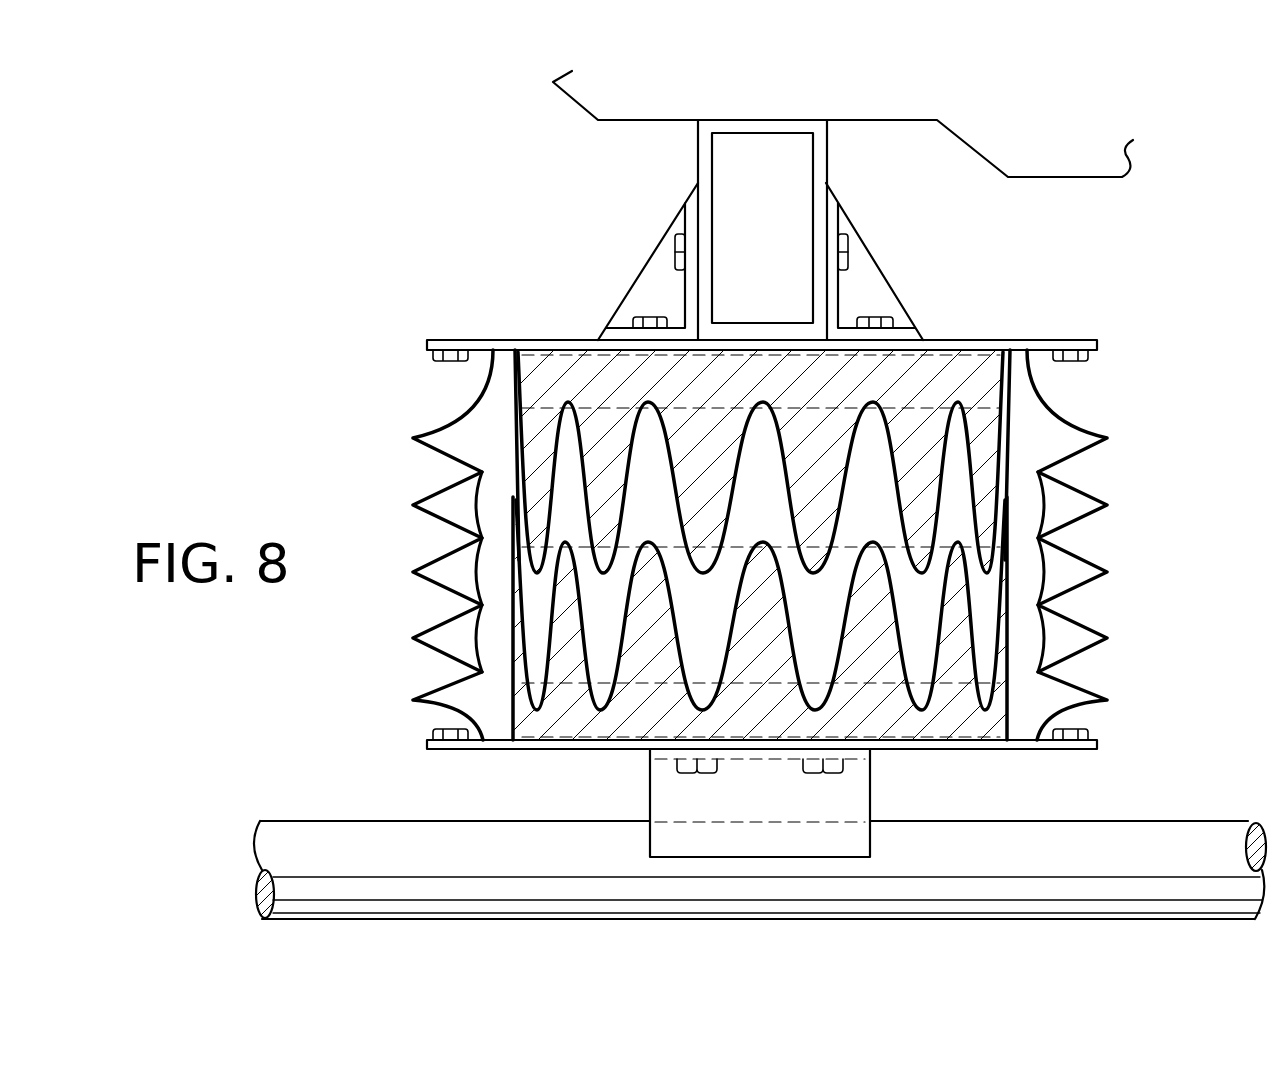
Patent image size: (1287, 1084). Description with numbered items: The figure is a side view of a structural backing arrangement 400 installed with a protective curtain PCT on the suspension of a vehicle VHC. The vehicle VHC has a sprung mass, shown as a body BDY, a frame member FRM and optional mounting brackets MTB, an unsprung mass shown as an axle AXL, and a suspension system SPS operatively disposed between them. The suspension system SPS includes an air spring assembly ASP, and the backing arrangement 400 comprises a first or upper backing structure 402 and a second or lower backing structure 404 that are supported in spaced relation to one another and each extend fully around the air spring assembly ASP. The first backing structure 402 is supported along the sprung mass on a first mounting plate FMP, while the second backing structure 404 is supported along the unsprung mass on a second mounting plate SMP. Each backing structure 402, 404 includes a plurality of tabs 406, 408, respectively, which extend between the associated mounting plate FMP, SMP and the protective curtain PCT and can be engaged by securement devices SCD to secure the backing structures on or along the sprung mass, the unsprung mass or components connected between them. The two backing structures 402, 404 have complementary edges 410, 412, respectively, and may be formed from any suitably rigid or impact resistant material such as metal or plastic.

The structural backing arrangement 400 is at (483, 437).
The first backing structure 402 is at (998, 423).
The second backing structure 404 is at (1005, 662).
The tabs 406 is at (500, 345).
The tabs 408 is at (1025, 750).
The complementary edge 410 is at (674, 520).
The complementary edge 412 is at (729, 645).
The vehicle VHC is at (449, 200).
The body BDY is at (976, 150).
The frame member FRM is at (828, 176).
The mounting brackets MTB is at (650, 258).
The first mounting plate FMP is at (993, 340).
The second mounting plate SMP is at (533, 750).
The securement devices SCD is at (1086, 360).
The suspension system SPS is at (391, 516).
The protective curtain PCT is at (437, 628).
The air spring assembly ASP is at (963, 492).
The axle AXL is at (290, 838).